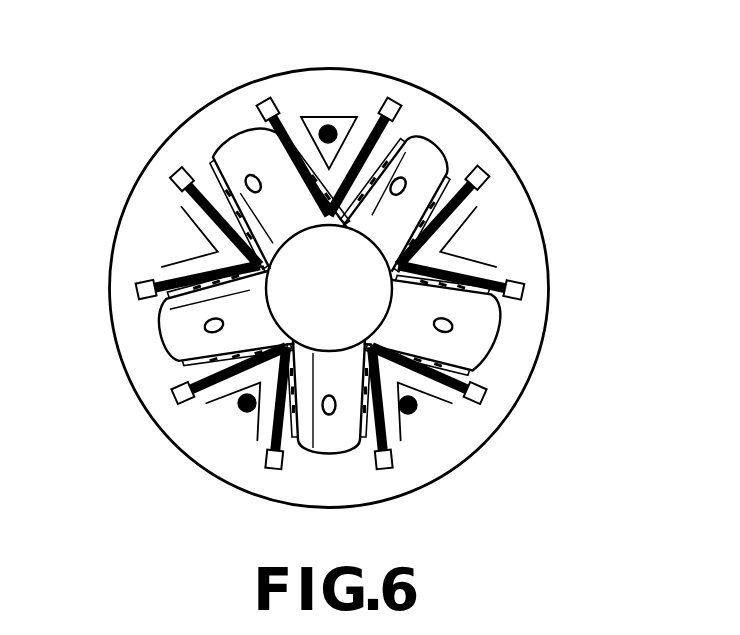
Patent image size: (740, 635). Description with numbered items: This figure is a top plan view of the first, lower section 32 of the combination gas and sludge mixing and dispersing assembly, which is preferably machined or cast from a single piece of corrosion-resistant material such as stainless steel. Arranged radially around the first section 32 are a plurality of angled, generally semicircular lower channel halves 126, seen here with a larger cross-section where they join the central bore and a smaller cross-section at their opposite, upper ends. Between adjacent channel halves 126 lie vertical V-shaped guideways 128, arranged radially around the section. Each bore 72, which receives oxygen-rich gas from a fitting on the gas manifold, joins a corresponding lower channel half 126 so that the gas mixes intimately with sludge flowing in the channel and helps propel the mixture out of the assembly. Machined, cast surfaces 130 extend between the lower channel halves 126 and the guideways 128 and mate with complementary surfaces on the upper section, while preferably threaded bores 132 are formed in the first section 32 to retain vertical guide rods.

The first, lower section 32 is at (144, 89).
The bore 72 is at (250, 178).
The lower channel halves 126 is at (238, 133).
The vertical V-shaped guideways 128 is at (378, 100).
The machined, cast surfaces 130 is at (250, 142).
The bores 132 is at (328, 126).